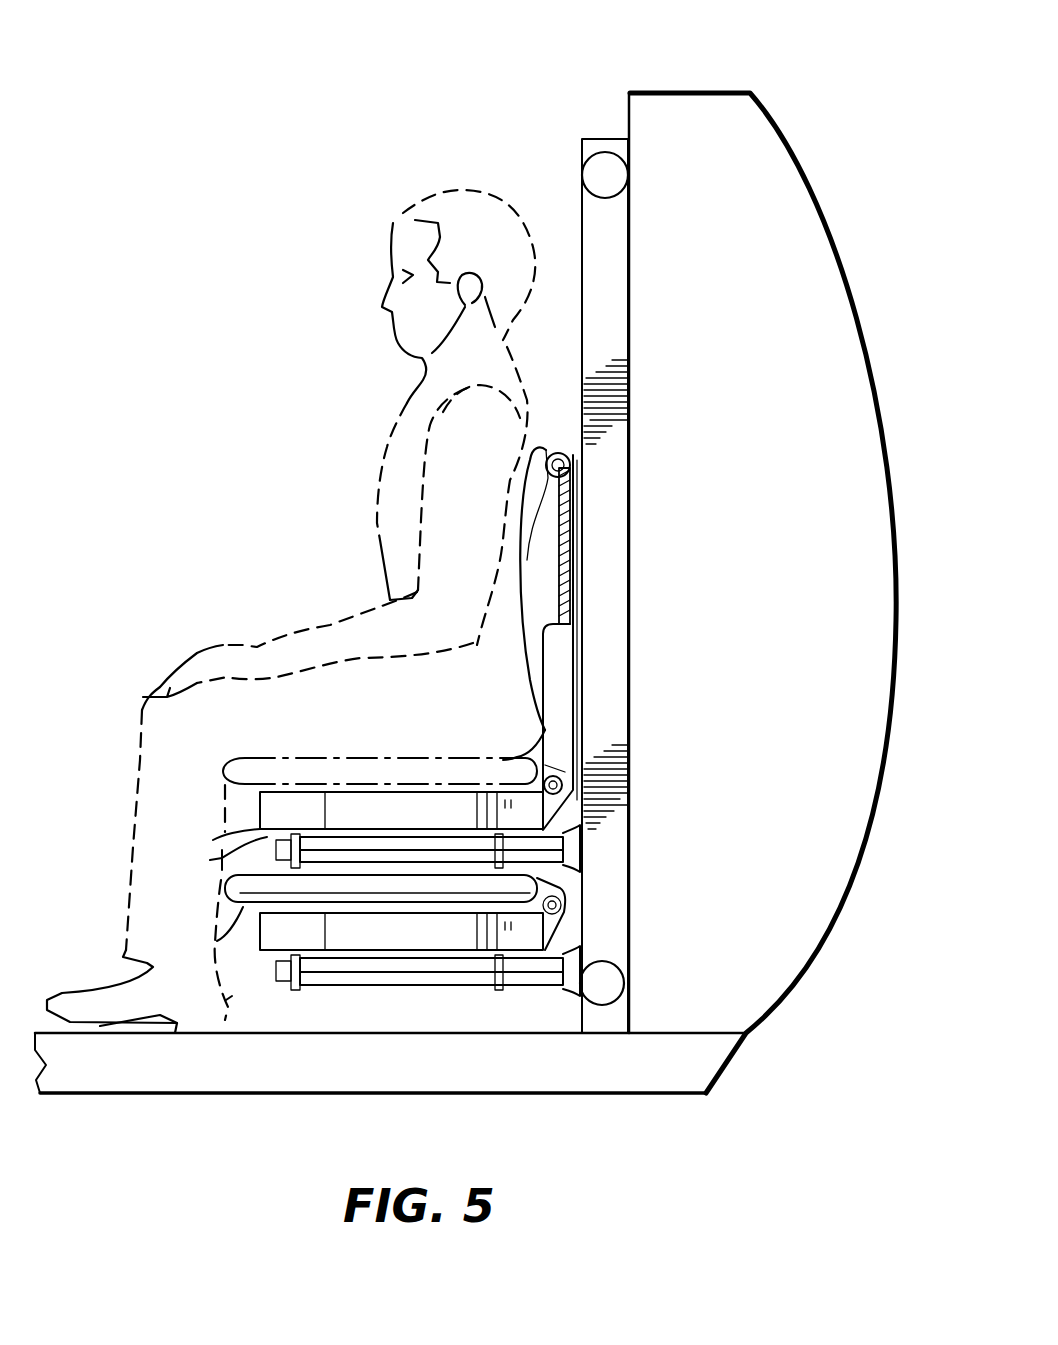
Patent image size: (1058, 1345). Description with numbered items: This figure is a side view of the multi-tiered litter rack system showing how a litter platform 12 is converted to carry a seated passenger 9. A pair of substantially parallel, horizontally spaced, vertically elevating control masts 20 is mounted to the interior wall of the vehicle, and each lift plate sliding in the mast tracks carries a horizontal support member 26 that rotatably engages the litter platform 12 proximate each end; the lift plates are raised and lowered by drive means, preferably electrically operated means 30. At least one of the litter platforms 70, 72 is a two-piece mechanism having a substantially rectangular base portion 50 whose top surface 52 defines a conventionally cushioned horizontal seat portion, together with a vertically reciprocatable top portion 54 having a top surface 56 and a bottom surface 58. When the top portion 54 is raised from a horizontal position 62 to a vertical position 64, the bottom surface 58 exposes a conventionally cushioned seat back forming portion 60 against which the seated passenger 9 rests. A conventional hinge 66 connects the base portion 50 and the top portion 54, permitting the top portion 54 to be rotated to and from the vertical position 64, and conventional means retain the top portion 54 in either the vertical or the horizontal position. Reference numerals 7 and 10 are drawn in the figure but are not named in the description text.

The floor 7 is at (225, 1078).
The seated passenger 9 is at (395, 220).
The vehicle wall 10 is at (706, 93).
The litter platform 12 is at (222, 860).
The control mast 20 is at (604, 139).
The horizontal support member 26 is at (545, 865).
The electrically operated means 30 is at (593, 170).
The base portion 50 is at (290, 800).
The top surface 52 is at (385, 790).
The top portion 54 is at (578, 463).
The top surface 56 is at (575, 552).
The bottom surface 58 is at (523, 623).
The seat back forming portion 60 is at (535, 575).
The horizontal position 62 is at (224, 881).
The vertical position 64 is at (566, 458).
The hinge 66 is at (553, 772).
The litter platform 70 is at (217, 941).
The two-piece litter platform 72 is at (213, 840).